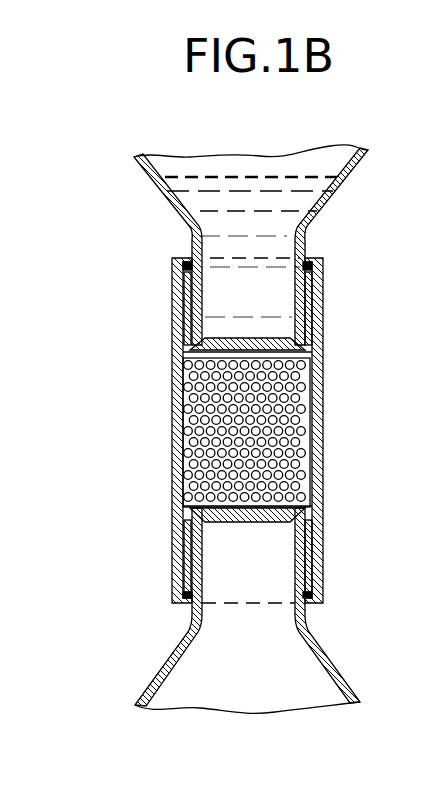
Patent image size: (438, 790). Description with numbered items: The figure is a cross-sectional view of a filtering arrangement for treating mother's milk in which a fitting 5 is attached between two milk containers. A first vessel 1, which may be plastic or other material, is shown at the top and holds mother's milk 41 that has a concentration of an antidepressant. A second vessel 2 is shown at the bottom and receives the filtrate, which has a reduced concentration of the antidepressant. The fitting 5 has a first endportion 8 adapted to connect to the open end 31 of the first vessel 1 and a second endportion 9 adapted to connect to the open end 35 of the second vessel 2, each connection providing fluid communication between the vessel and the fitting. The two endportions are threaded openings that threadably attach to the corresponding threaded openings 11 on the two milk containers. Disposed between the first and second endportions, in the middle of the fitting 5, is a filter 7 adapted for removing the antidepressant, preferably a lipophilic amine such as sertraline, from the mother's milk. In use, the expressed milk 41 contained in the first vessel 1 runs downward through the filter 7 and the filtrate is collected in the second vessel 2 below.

The first vessel 1 is at (352, 186).
The second vessel 2 is at (338, 667).
The fitting 5 is at (173, 397).
The filter 7 is at (298, 420).
The first endportion 8 is at (313, 306).
The second endportion 9 is at (308, 552).
The threaded opening 11 is at (313, 278).
The open end of the first vessel 31 is at (232, 340).
The open end of the second vessel 35 is at (232, 522).
The mother's milk 41 is at (203, 190).